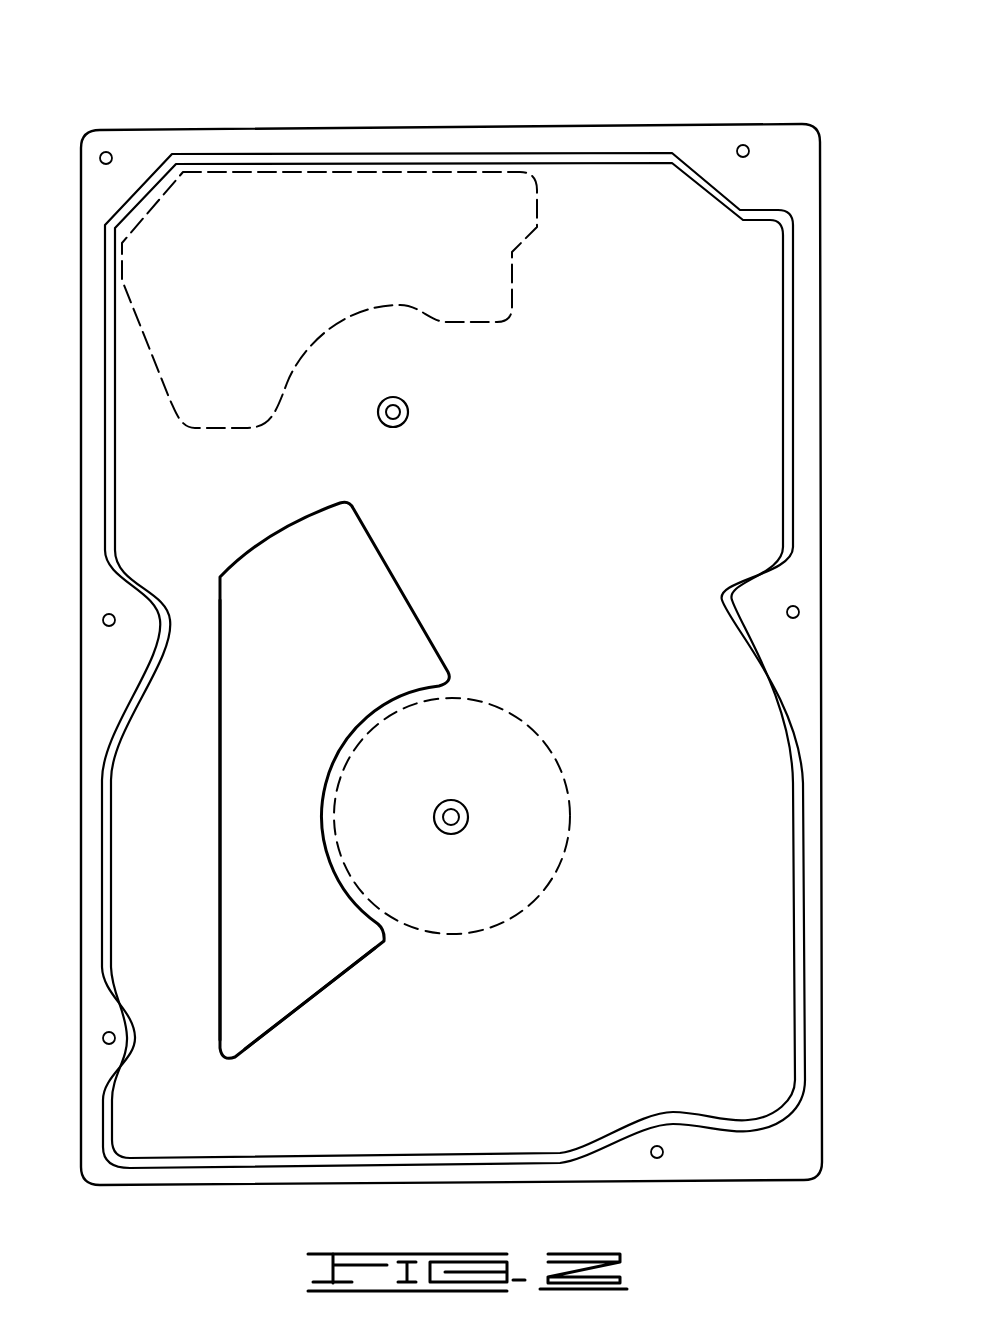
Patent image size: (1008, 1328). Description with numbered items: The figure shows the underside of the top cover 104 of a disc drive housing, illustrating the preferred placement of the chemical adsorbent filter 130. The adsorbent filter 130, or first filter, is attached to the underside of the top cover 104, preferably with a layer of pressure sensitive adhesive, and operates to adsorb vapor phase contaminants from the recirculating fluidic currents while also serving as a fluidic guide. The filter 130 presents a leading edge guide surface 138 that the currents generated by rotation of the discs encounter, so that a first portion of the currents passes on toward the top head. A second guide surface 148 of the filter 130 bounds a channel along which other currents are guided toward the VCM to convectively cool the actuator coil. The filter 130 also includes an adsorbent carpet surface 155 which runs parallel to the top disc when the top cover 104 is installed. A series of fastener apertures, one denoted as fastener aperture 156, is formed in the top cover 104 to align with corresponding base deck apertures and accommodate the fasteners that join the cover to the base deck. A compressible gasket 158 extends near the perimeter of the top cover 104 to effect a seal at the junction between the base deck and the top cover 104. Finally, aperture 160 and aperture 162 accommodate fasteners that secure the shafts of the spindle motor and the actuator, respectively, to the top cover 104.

The top cover 104 is at (153, 98).
The chemical adsorbent filter 130 is at (298, 952).
The leading edge guide surface 138 is at (293, 1020).
The second guide surface 148 is at (222, 840).
The adsorbent surface 155 is at (248, 765).
The fastener aperture 156 is at (657, 1159).
The compressible gasket 158 is at (805, 857).
The aperture 160 is at (455, 803).
The aperture 162 is at (403, 399).